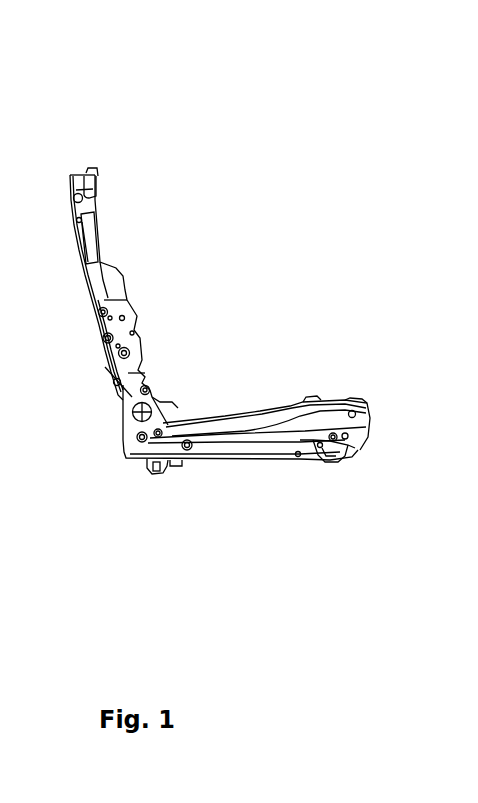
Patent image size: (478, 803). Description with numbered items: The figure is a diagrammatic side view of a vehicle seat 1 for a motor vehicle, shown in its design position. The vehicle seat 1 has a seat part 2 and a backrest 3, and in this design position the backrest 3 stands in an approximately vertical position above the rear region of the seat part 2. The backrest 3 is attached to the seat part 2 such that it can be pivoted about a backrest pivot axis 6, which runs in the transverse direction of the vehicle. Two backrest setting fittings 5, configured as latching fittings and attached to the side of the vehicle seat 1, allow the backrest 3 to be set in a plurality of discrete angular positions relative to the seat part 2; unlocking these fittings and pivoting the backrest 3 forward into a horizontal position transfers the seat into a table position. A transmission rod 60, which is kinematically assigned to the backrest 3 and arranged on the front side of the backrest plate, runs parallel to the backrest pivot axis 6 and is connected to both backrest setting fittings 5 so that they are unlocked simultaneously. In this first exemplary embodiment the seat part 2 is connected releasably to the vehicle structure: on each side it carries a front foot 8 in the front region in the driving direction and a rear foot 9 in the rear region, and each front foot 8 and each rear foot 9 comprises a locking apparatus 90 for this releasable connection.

The vehicle seat 1 is at (126, 96).
The seat part 2 is at (278, 425).
The backrest 3 is at (93, 268).
The backrest setting fitting 5 is at (118, 329).
The backrest pivot axis 6 is at (127, 358).
The front foot 8 is at (333, 453).
The rear foot 9 is at (153, 465).
The transmission rod 60 is at (105, 306).
The locking apparatus 90 is at (153, 465).